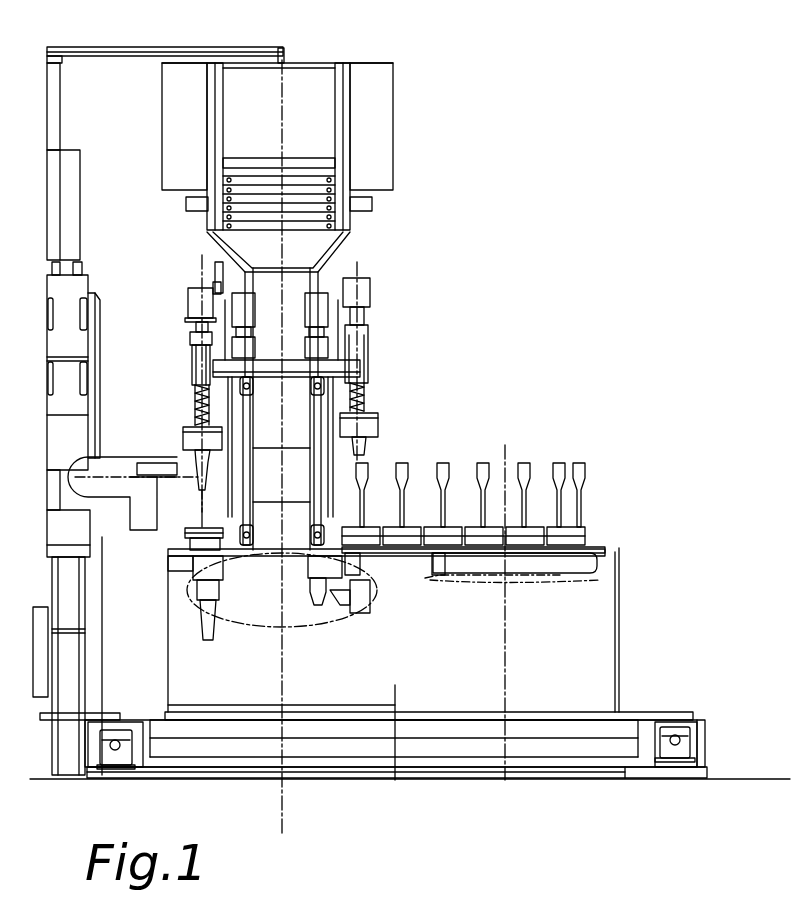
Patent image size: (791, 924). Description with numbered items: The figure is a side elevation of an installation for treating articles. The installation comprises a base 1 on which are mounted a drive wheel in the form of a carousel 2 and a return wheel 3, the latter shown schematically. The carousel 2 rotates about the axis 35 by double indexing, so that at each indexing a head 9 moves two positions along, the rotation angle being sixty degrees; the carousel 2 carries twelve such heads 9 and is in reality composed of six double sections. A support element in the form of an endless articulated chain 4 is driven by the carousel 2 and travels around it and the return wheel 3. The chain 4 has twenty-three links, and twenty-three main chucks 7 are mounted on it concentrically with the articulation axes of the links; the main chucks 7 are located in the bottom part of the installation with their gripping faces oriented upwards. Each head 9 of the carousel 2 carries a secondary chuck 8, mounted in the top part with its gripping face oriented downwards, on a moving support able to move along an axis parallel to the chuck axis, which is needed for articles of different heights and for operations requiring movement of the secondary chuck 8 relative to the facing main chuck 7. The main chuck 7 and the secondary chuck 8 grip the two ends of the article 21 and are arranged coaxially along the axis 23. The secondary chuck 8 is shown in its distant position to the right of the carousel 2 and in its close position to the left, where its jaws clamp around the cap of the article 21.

The base 1 is at (595, 648).
The carousel 2 is at (385, 378).
The return wheel 3 is at (548, 565).
The endless articulated chain 4 is at (455, 527).
The main chuck 7 is at (183, 542).
The secondary chuck 8 is at (192, 440).
The head 9 is at (182, 298).
The article 21 is at (580, 462).
The axis 23 is at (177, 637).
The axis 35 is at (282, 683).